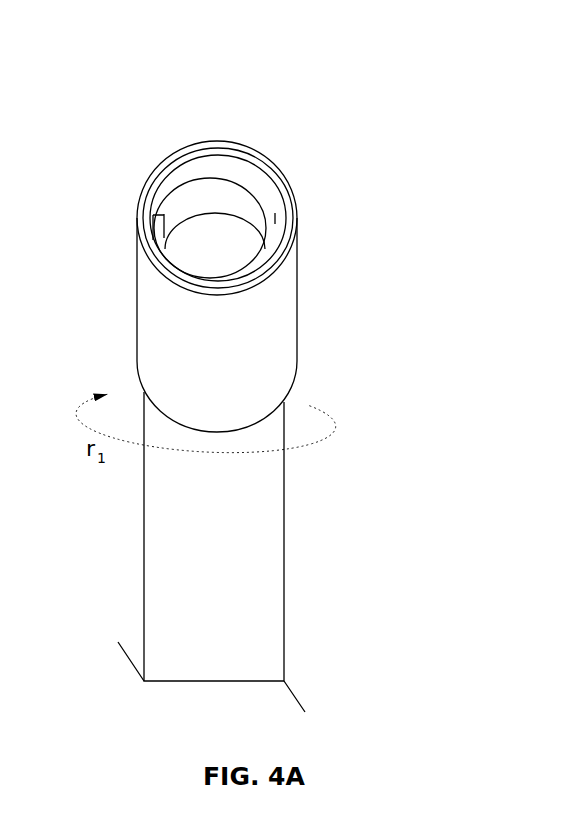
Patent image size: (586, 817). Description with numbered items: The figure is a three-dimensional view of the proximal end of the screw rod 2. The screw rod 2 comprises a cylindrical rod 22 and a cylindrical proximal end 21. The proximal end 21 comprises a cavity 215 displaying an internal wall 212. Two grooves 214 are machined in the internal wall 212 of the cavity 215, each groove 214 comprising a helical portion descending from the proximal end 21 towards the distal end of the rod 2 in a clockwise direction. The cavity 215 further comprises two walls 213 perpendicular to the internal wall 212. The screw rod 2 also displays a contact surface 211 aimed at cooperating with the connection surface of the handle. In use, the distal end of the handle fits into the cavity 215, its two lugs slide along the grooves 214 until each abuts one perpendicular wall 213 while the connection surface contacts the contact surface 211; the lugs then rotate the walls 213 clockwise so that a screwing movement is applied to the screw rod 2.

The screw rod 2 is at (273, 357).
The cylindrical proximal end 21 is at (257, 217).
The cylindrical rod 22 is at (186, 552).
The contact surface 211 is at (172, 195).
The internal wall 212 is at (163, 216).
The perpendicular wall 213 is at (228, 255).
The groove 214 is at (300, 157).
The cavity 215 is at (288, 186).